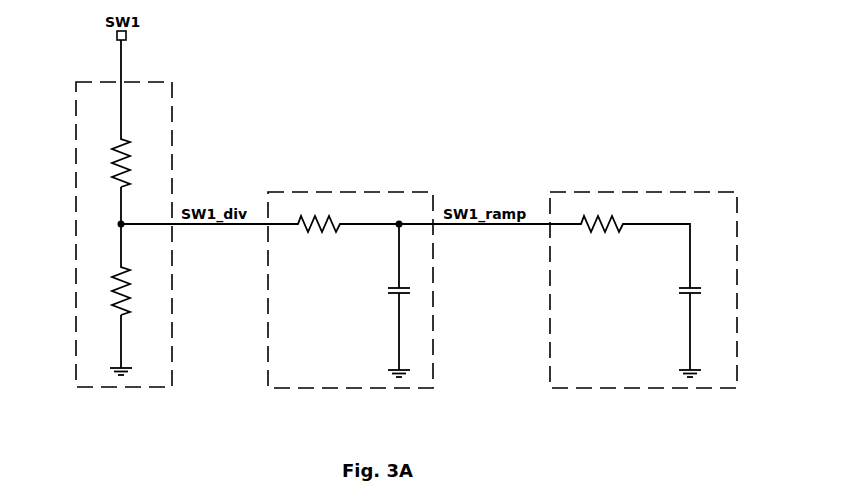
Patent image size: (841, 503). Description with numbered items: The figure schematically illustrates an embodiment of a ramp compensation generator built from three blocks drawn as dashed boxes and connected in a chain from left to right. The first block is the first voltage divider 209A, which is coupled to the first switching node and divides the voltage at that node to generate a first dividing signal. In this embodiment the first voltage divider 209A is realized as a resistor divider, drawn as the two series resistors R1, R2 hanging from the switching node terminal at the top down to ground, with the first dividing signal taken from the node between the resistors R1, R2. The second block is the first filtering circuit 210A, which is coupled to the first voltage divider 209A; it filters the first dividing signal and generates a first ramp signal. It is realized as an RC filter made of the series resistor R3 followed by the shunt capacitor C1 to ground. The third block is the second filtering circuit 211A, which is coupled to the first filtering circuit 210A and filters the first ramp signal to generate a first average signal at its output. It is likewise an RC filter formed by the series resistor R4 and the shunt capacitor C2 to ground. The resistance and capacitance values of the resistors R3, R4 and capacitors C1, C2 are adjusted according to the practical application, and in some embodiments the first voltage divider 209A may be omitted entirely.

The first voltage divider 209A is at (76, 387).
The first filtering circuit 210A is at (268, 388).
The second filtering circuit 211A is at (550, 388).
The resistor R1 is at (135, 162).
The resistor R2 is at (135, 290).
The resistor R3 is at (318, 236).
The resistor R4 is at (601, 237).
The capacitor C1 is at (389, 297).
The capacitor C2 is at (680, 329).